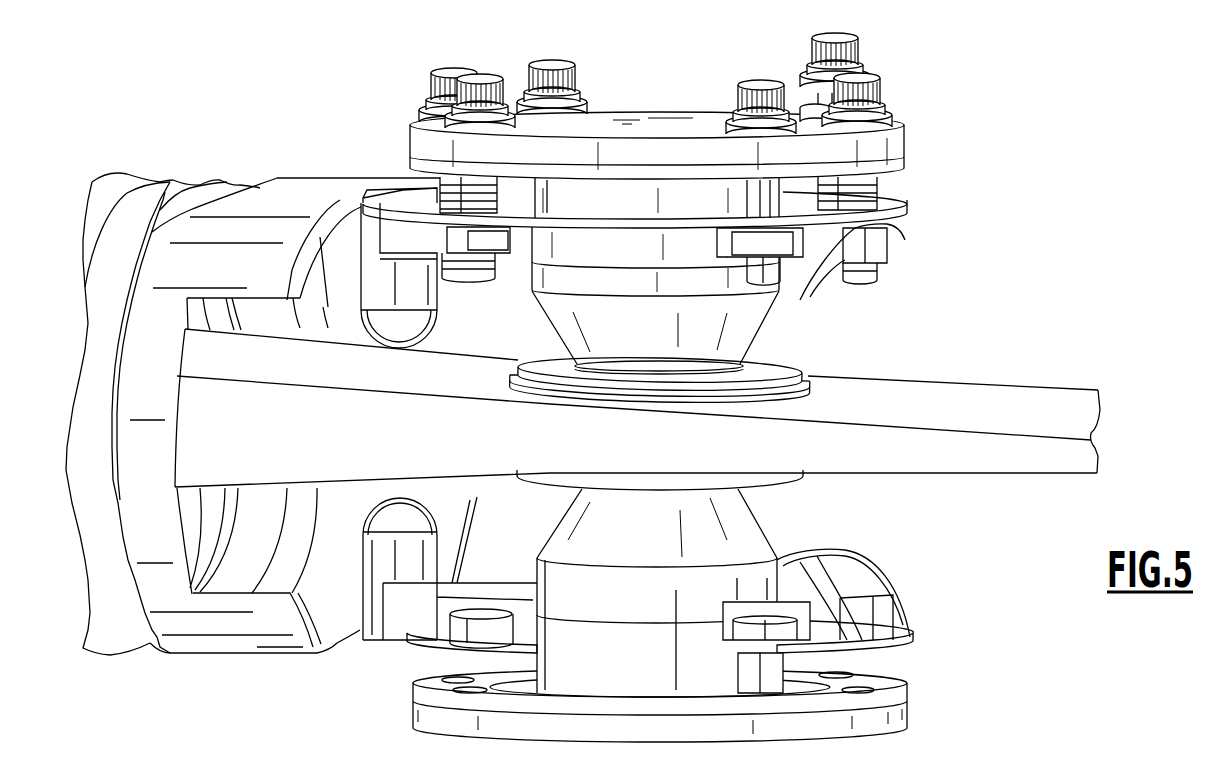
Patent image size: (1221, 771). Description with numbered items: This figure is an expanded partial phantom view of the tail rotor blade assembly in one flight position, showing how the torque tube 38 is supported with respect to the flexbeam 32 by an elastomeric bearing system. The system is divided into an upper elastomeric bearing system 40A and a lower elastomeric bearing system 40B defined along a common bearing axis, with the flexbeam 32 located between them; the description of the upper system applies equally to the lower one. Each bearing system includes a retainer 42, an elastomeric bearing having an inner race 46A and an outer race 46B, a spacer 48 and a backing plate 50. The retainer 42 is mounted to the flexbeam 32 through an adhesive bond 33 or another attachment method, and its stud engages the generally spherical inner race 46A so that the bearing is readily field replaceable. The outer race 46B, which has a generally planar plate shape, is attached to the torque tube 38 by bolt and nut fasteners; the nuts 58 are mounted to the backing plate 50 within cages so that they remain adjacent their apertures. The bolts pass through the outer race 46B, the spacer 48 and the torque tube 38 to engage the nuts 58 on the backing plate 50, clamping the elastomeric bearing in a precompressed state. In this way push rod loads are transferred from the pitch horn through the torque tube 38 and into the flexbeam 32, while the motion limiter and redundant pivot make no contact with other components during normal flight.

The flexbeam 32 is at (1047, 400).
The adhesive bond 33 is at (804, 393).
The torque tube 38 is at (293, 193).
The upper elastomeric bearing system 40A is at (815, 341).
The lower elastomeric bearing system 40B is at (885, 520).
The retainer 42 is at (805, 378).
The inner race 46A is at (756, 360).
The outer race 46B is at (900, 131).
The spacer 48 is at (902, 155).
The backing plate 50 is at (908, 220).
The nut 58 is at (877, 240).